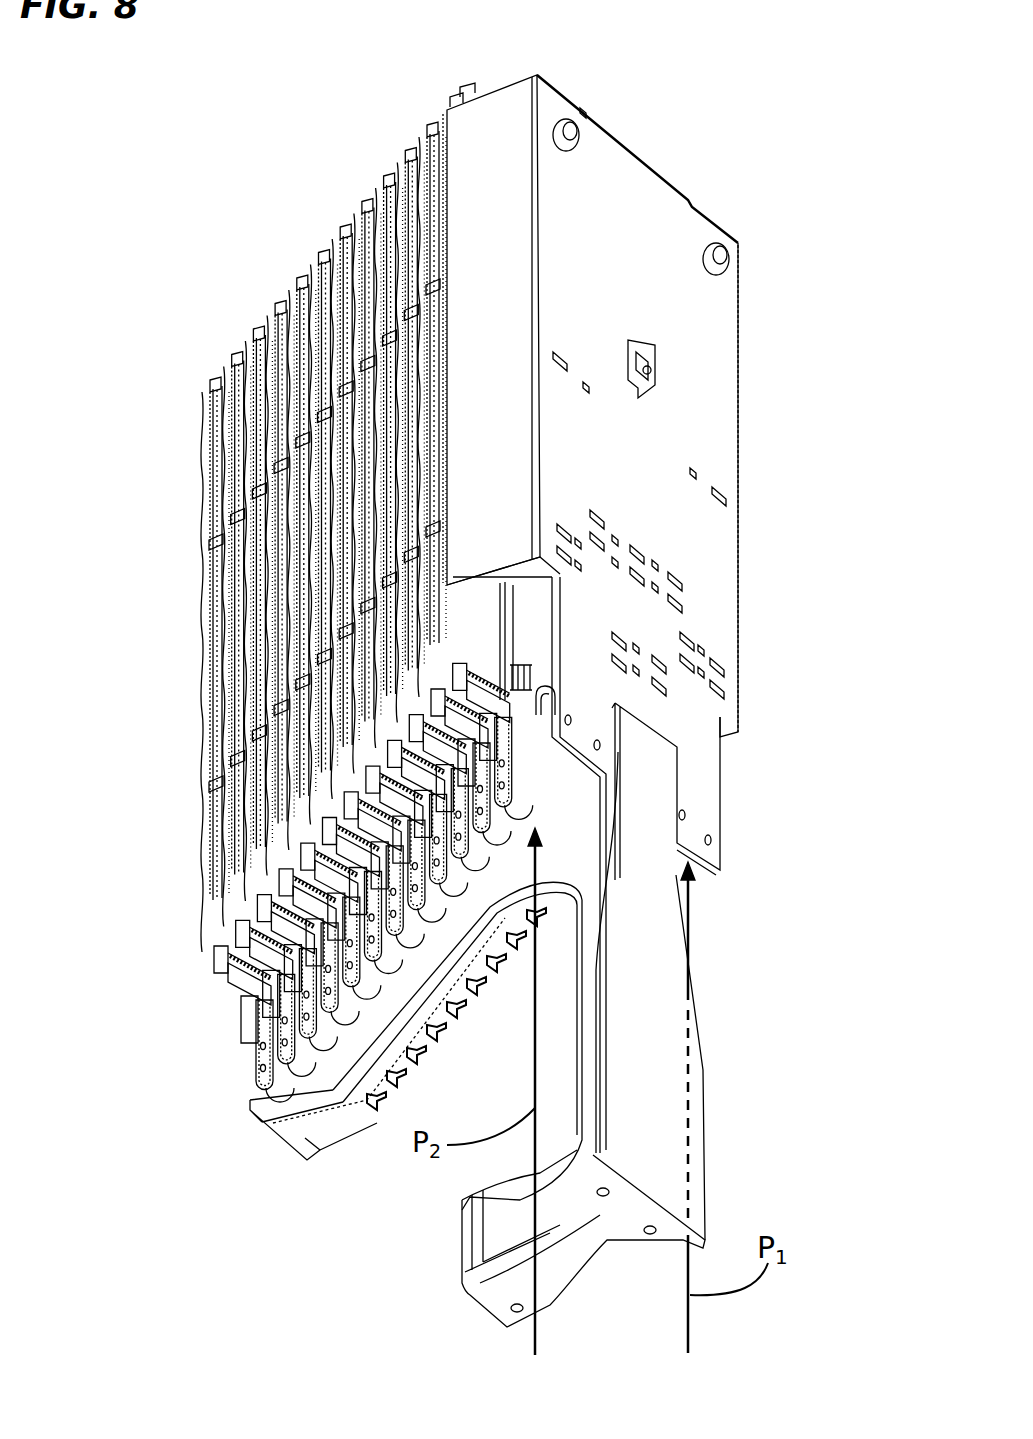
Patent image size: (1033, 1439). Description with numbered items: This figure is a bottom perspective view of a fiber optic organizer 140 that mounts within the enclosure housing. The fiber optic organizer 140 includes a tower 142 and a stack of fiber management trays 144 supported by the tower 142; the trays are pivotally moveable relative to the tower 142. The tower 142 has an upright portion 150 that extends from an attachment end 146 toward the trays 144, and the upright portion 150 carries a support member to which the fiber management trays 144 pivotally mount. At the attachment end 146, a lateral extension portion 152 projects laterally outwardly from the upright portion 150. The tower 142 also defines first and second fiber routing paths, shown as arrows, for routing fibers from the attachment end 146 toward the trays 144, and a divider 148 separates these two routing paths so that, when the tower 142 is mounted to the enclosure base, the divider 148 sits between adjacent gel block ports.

The fiber optic organizer 140 is at (770, 257).
The tower 142 is at (742, 462).
The fiber management trays 144 is at (325, 252).
The attachment end 146 is at (480, 1283).
The divider 148 is at (653, 1055).
The upright portion 150 is at (642, 817).
The lateral extension portion 152 is at (505, 1217).